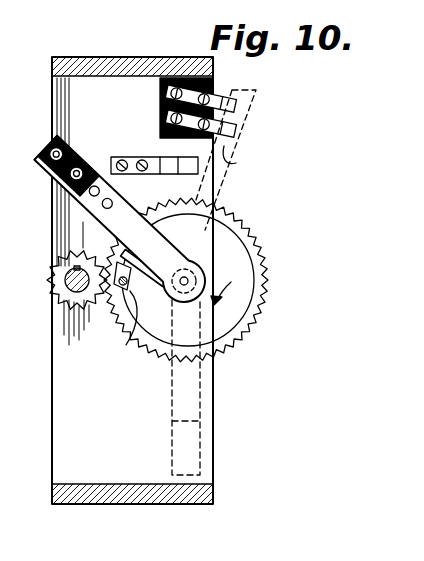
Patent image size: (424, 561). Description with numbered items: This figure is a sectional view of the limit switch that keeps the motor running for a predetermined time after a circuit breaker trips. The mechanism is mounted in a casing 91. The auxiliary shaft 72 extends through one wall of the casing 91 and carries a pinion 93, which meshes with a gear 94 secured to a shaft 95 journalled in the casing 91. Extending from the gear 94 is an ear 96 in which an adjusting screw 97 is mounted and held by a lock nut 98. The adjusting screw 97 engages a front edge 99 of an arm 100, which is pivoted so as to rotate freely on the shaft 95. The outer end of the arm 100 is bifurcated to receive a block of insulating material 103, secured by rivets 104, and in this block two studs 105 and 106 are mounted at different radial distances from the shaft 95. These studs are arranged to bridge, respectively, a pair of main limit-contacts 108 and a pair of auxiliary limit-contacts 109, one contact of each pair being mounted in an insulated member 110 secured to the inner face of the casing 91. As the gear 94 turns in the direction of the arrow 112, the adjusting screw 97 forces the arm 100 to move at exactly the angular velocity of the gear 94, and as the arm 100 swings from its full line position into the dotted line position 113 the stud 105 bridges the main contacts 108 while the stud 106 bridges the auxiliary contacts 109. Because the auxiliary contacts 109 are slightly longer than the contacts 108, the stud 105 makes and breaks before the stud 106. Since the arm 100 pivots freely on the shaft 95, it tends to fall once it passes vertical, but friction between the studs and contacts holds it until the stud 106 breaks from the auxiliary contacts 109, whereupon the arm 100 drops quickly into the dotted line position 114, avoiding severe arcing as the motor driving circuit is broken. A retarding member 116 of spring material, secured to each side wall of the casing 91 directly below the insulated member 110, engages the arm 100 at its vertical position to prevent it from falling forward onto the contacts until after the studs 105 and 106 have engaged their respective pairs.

The auxiliary shaft 72 is at (72, 292).
The casing 91 is at (72, 452).
The pinion 93 is at (59, 298).
The gear 94 is at (243, 341).
The shaft 95 is at (188, 281).
The ear 96 is at (156, 290).
The adjusting screw 97 is at (120, 292).
The lock nut 98 is at (126, 346).
The front edge 99 is at (175, 244).
The arm 100 is at (108, 217).
The block of insulating material 103 is at (92, 191).
The rivets 104 is at (106, 206).
The stud 105 is at (73, 153).
The stud 106 is at (62, 176).
The main limit-contacts 108 is at (229, 100).
The auxiliary limit-contacts 109 is at (233, 164).
The insulated member 110 is at (204, 104).
The arrow 112 is at (232, 294).
The dotted line position 113 is at (251, 128).
The dotted line position 114 is at (200, 421).
The retarding members 116 is at (182, 157).